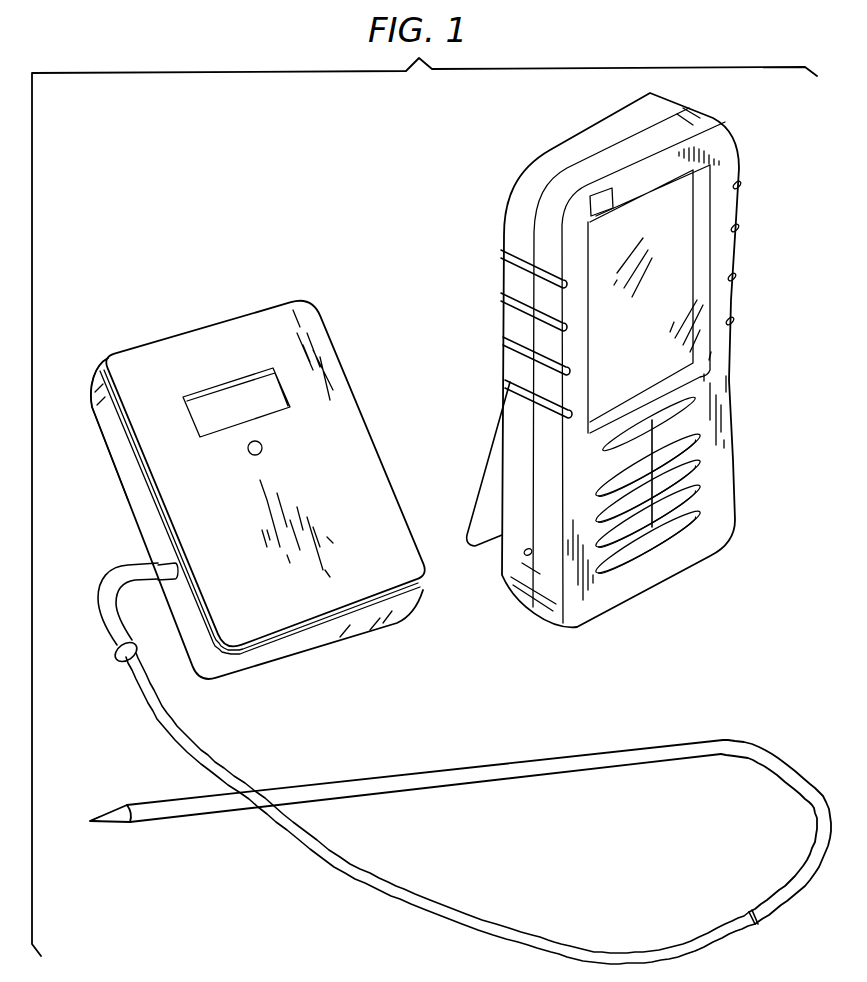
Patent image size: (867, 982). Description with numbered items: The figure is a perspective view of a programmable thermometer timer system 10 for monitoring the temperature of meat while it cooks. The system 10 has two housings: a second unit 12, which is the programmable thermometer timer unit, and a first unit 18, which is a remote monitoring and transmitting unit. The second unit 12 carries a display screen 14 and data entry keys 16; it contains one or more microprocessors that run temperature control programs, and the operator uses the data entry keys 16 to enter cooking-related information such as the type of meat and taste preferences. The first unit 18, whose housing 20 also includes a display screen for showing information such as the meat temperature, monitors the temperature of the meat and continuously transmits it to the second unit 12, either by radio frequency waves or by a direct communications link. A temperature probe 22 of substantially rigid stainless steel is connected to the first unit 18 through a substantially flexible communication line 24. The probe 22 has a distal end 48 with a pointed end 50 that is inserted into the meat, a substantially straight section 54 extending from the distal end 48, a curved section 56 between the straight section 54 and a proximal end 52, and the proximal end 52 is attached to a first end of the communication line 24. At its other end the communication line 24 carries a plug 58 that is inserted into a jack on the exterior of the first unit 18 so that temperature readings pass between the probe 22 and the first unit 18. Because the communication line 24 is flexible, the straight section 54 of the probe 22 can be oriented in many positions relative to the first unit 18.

The programmable thermometer timer system 10 is at (636, 374).
The second unit 12 is at (742, 542).
The display screen 14 is at (676, 240).
The data entry keys 16 is at (645, 560).
The first unit 18 is at (127, 500).
The receiver housing 20 is at (95, 388).
The temperature probe 22 is at (453, 808).
The communication line 24 is at (337, 861).
The distal end 48 is at (142, 809).
The pointed end 50 is at (113, 824).
The proximal end 52 is at (750, 915).
The straight section 54 is at (362, 780).
The curved section 56 is at (767, 753).
The plug 58 is at (97, 580).